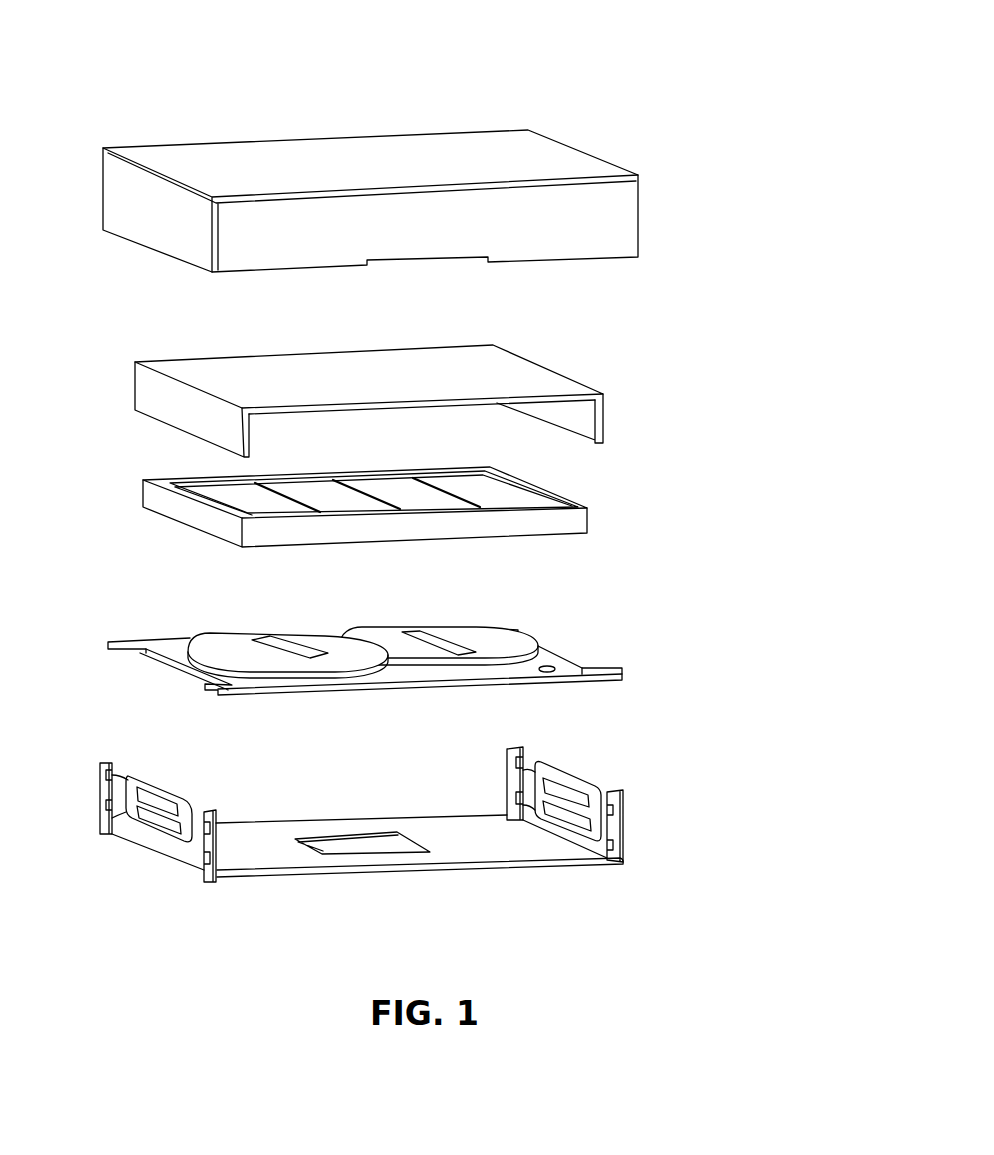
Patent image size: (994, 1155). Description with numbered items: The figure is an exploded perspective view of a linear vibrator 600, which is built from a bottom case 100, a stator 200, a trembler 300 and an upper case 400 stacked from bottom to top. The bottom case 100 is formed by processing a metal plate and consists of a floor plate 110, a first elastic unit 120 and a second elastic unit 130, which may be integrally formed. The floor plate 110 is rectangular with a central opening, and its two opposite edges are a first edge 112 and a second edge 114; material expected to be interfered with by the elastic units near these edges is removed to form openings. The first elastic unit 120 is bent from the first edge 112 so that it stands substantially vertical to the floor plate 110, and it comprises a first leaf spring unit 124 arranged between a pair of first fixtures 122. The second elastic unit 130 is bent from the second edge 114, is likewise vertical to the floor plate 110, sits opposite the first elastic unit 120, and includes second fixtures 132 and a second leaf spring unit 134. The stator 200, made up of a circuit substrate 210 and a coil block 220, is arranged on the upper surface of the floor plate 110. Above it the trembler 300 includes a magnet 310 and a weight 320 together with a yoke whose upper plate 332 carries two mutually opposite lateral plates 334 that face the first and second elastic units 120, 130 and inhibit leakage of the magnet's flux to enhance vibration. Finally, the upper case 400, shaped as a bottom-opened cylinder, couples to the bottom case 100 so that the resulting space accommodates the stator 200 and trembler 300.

The linear vibrator 600 is at (582, 118).
The upper case 400 is at (653, 195).
The trembler 300 is at (715, 453).
The upper plate 332 is at (493, 370).
The lateral plates 334 is at (603, 417).
The magnet 310 is at (397, 492).
The weight 320 is at (582, 522).
The stator 200 is at (640, 658).
The circuit substrate 210 is at (552, 665).
The coil block 220 is at (367, 637).
The bottom case 100 is at (655, 802).
The floor plate 110 is at (480, 845).
The first edge 112 is at (215, 880).
The second edge 114 is at (627, 858).
The first elastic unit 120 is at (150, 775).
The first fixtures 122 is at (202, 823).
The first leaf spring unit 124 is at (173, 798).
The second elastic unit 130 is at (582, 772).
The second fixtures 132 is at (607, 807).
The second leaf spring unit 134 is at (555, 768).